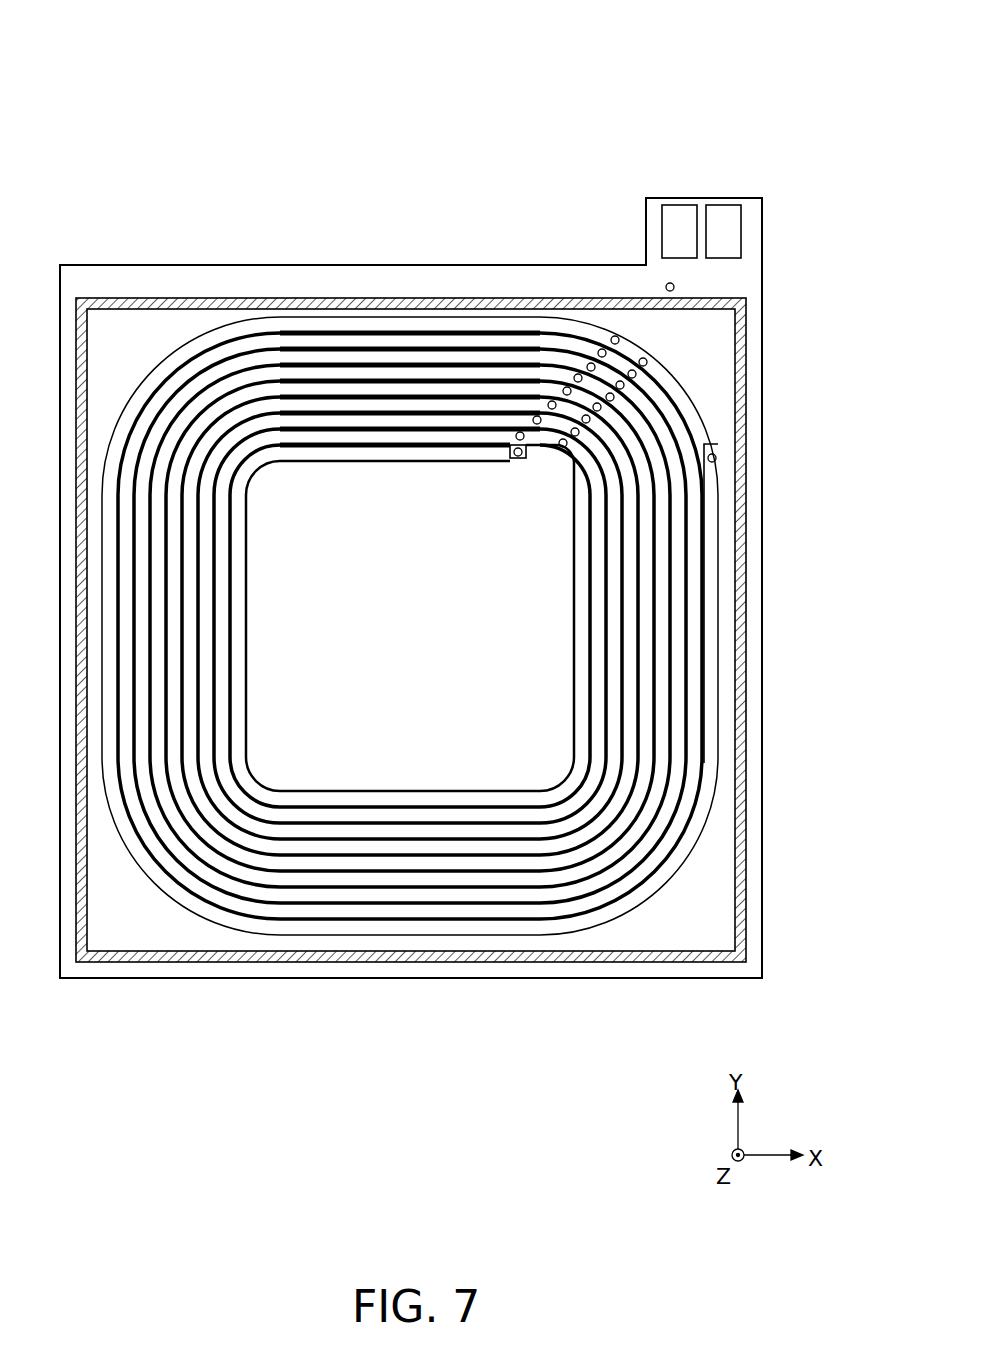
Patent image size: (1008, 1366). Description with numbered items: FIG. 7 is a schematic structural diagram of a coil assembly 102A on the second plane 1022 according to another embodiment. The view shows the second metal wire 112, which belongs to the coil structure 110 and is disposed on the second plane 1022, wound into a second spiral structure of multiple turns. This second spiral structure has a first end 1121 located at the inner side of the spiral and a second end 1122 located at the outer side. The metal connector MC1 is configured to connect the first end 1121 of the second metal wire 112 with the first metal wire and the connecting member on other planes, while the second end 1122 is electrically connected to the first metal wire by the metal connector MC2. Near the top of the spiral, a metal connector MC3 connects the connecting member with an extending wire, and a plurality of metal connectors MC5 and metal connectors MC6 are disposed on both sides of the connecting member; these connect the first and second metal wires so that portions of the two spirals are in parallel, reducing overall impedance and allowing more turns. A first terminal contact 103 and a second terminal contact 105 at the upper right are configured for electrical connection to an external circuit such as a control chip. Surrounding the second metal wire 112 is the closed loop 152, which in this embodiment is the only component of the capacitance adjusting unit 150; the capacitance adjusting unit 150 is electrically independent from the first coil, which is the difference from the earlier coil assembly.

The coil assembly 102A is at (92, 33).
The closed loop 152 is at (342, 297).
The capacitance adjusting unit 150 is at (461, 630).
The first terminal contact 103 is at (678, 215).
The second terminal contact 105 is at (725, 215).
The metal connector MC3 is at (667, 285).
The metal connectors MC5 is at (612, 337).
The metal connectors MC6 is at (648, 357).
The metal connector MC2 is at (716, 453).
The metal connector MC1 is at (516, 457).
The first end 1121 is at (485, 449).
The second end 1122 is at (716, 514).
The second metal wire 112 is at (730, 607).
The coil structure 110 is at (474, 572).
The second plane 1022 is at (722, 847).